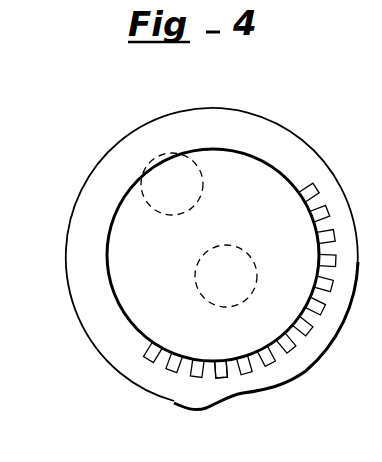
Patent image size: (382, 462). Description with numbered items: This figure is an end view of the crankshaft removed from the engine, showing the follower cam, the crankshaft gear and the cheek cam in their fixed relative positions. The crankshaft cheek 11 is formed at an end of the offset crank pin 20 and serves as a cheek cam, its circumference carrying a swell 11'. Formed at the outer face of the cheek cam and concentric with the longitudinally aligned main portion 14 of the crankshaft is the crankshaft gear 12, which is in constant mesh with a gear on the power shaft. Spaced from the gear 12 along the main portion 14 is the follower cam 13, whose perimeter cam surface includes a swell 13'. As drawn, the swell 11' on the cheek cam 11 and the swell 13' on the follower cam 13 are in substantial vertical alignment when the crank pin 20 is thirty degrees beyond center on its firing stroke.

The crankshaft cheek 11 is at (188, 254).
The swell 11' is at (240, 406).
The crankshaft gear 12 is at (230, 371).
The follower cam 13 is at (167, 255).
The swell 13' is at (240, 231).
The main portion 14 is at (200, 294).
The crank pin 20 is at (194, 159).